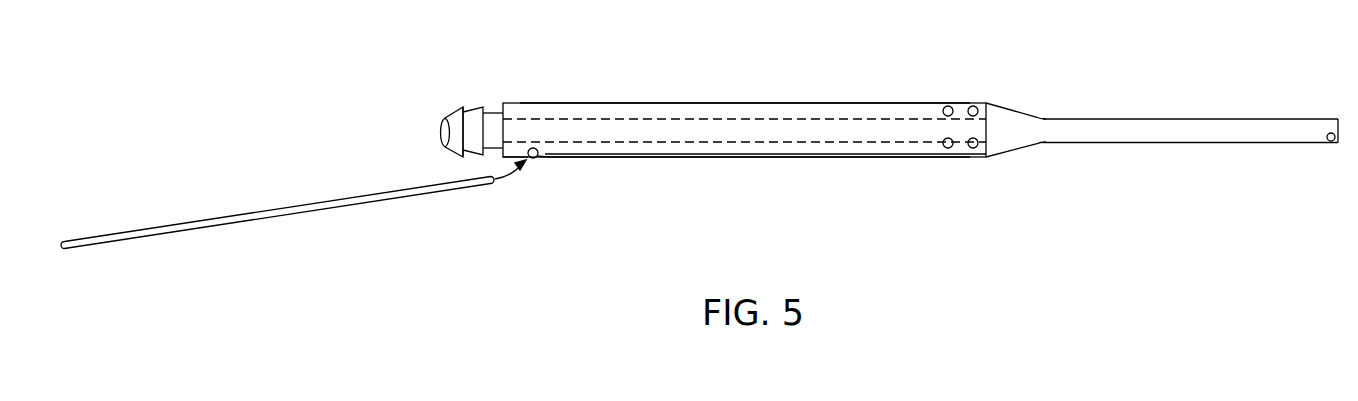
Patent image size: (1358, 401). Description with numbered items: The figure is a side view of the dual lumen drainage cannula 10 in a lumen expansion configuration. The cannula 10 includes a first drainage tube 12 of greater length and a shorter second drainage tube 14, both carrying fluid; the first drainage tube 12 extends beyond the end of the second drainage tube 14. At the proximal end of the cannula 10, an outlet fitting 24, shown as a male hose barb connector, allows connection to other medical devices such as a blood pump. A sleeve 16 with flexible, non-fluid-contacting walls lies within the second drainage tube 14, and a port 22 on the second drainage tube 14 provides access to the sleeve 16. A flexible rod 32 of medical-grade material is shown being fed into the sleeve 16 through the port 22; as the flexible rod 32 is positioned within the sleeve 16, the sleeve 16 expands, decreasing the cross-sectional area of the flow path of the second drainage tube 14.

The dual lumen drainage cannula 10 is at (883, 88).
The first drainage tube 12 is at (1162, 119).
The second drainage tube 14 is at (745, 103).
The sleeve 16 is at (720, 157).
The port 22 is at (534, 160).
The outlet fitting 24 is at (474, 95).
The flexible rod 32 is at (277, 218).